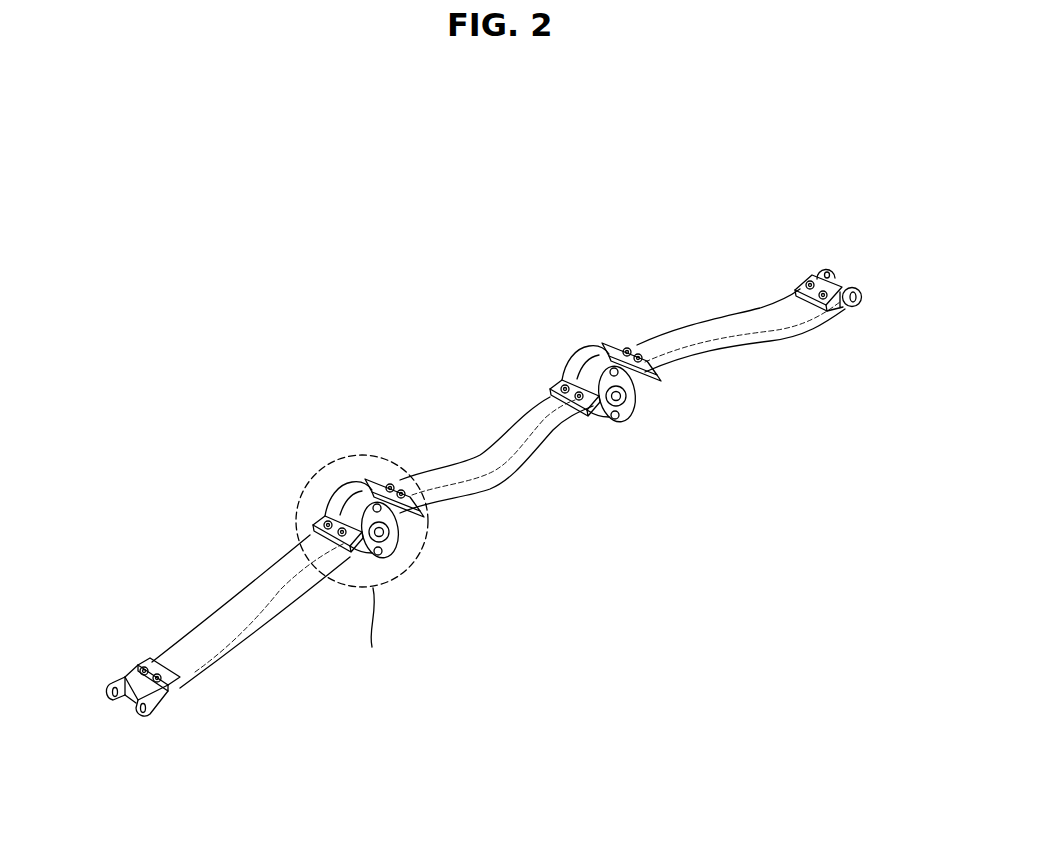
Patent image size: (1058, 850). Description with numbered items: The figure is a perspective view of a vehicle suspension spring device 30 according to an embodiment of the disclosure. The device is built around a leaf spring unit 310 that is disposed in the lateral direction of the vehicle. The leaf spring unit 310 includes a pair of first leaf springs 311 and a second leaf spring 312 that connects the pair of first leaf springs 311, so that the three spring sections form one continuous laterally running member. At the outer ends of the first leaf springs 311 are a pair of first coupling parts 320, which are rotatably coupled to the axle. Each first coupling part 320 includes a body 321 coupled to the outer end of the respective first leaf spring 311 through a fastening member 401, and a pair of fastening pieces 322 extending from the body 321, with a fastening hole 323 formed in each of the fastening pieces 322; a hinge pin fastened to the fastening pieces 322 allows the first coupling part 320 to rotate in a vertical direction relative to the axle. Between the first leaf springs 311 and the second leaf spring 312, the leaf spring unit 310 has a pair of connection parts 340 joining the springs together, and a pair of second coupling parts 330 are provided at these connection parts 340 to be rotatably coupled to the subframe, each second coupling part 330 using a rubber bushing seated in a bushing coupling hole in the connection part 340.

The vehicle suspension spring device 30 is at (346, 184).
The leaf spring unit 310 is at (590, 242).
The first leaf springs 311 is at (257, 582).
The second leaf spring 312 is at (480, 463).
The first coupling parts 320 is at (146, 727).
The body 321 is at (144, 666).
The fastening pieces 322 is at (120, 682).
The fastening holes 323 is at (118, 701).
The second coupling parts 330 is at (397, 533).
The connection parts 340 is at (405, 558).
The fastening member 401 is at (180, 678).